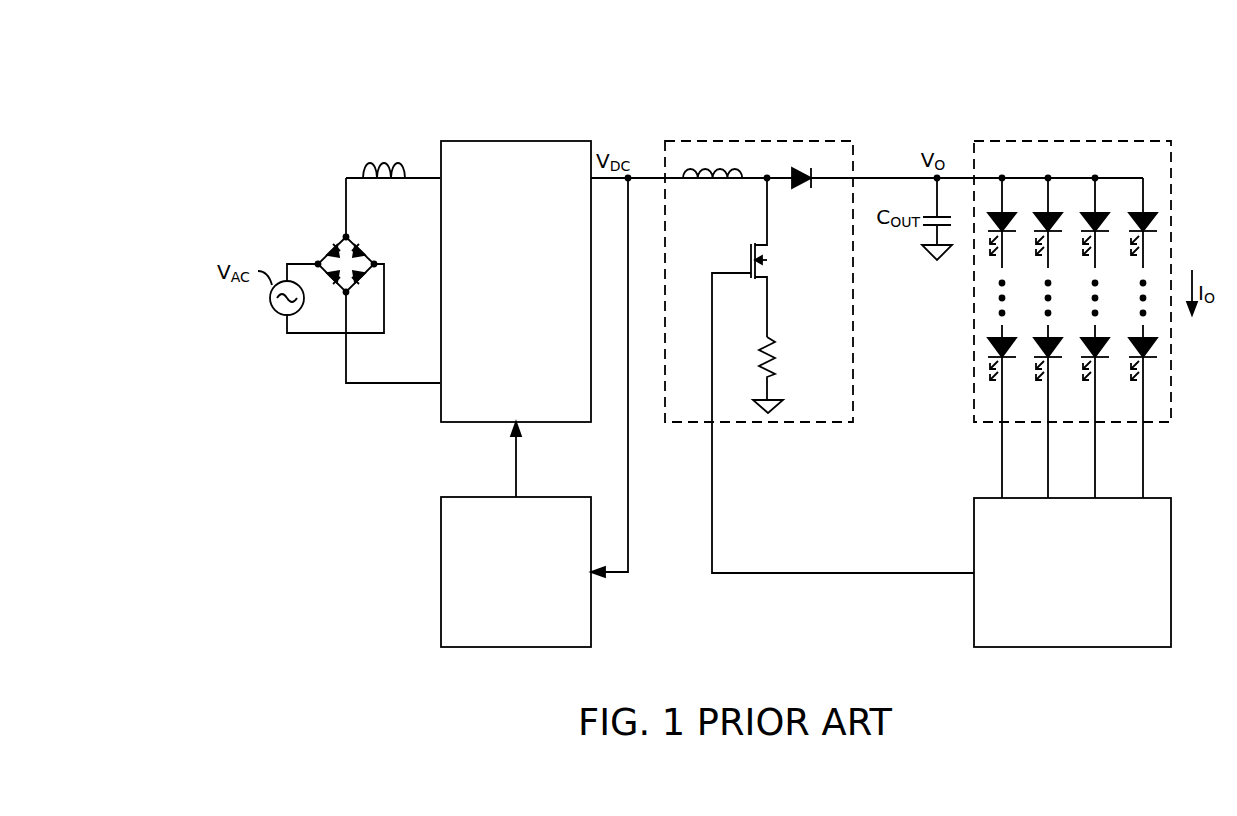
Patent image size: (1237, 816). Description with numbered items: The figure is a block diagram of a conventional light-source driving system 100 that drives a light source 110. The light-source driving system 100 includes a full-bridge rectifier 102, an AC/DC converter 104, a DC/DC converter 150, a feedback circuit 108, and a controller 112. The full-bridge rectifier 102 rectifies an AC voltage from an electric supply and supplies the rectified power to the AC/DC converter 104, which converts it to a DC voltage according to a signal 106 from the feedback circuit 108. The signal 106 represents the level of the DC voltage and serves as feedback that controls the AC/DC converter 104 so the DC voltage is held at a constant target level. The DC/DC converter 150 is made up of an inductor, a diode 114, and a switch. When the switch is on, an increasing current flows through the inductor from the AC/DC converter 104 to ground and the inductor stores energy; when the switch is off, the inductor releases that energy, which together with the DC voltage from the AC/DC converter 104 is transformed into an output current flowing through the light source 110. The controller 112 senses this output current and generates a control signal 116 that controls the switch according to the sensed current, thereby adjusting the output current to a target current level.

The light-source driving system 100 is at (298, 136).
The full-bridge rectifier 102 is at (346, 237).
The AC/DC converter 104 is at (497, 311).
The signal 106 is at (516, 447).
The feedback circuit 108 is at (497, 603).
The light source 110 is at (1115, 141).
The controller 112 is at (1053, 603).
The diode 114 is at (812, 189).
The control signal 116 is at (930, 573).
The DC/DC converter 150 is at (803, 141).